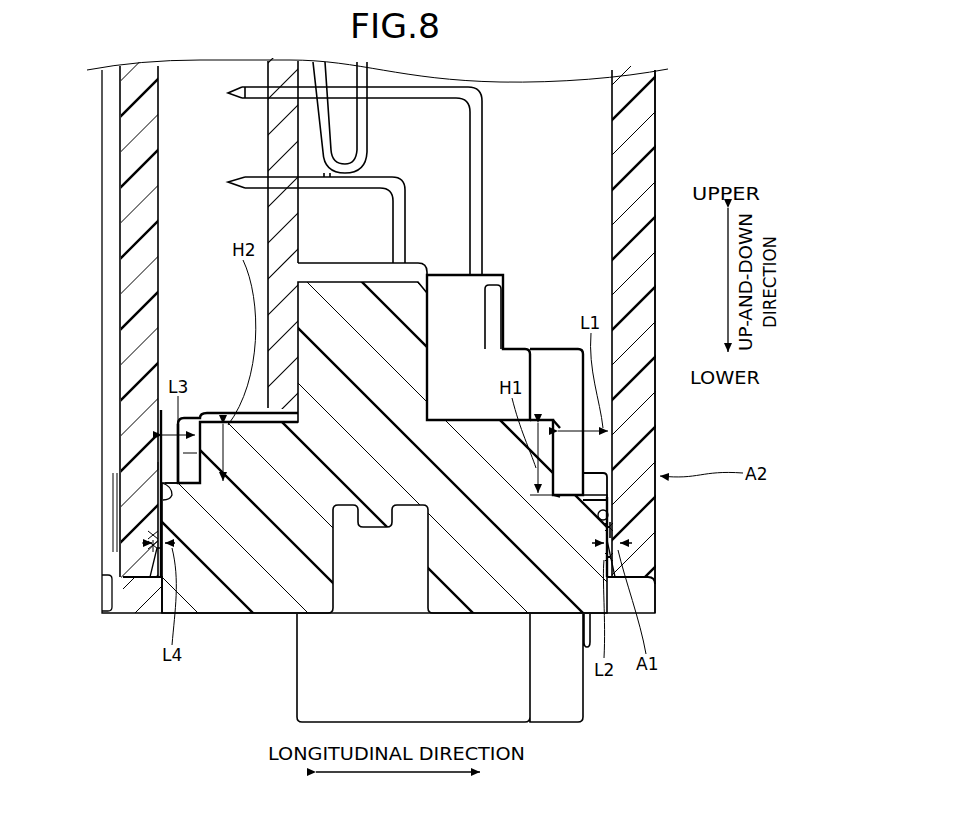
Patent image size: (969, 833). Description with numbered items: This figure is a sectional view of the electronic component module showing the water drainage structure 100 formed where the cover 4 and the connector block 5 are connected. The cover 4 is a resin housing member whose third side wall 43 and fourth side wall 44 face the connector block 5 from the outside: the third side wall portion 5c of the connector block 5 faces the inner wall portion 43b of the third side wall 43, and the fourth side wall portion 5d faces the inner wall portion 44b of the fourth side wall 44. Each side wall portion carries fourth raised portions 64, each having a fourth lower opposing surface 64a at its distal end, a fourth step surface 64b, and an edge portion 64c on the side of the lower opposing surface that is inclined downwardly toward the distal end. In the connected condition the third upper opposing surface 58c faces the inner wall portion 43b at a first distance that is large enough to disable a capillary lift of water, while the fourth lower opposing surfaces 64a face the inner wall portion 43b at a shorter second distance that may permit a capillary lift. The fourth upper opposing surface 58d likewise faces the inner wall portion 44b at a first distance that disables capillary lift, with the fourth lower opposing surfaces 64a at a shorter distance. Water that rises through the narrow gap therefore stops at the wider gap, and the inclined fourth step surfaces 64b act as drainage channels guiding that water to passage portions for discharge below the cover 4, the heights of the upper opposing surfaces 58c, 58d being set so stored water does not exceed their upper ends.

The water drainage structure 100 is at (65, 146).
The cover 4 is at (113, 288).
The fourth side wall 44 is at (116, 403).
The inner wall portion 44b is at (170, 500).
The third side wall 43 is at (590, 483).
The inner wall portion 43b is at (613, 530).
The connector block 5 is at (238, 407).
The third side wall portion 5c is at (594, 452).
The fourth side wall portion 5d is at (194, 434).
The third upper opposing surface 58c is at (558, 470).
The fourth upper opposing surface 58d is at (187, 477).
The fourth raised portion 64 is at (152, 546).
The fourth lower opposing surface 64a is at (152, 536).
The fourth step surface 64b is at (194, 453).
The edge portion 64c is at (165, 468).